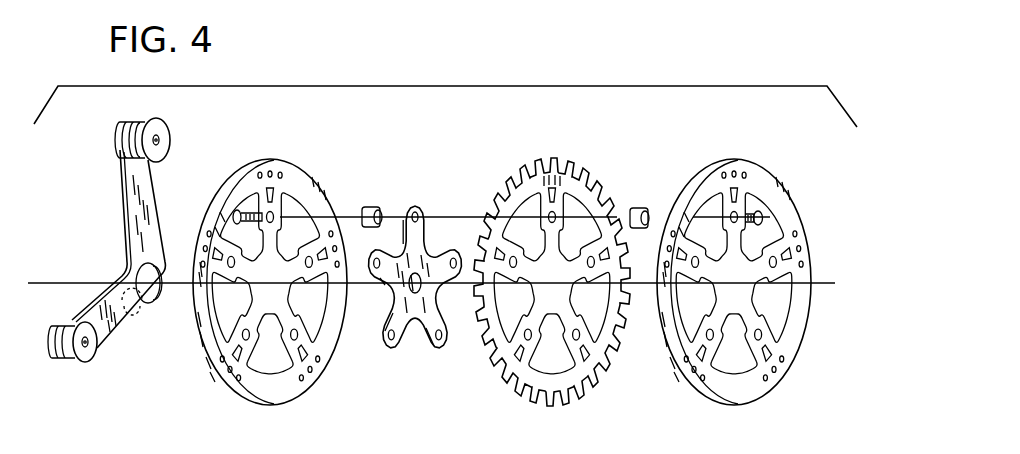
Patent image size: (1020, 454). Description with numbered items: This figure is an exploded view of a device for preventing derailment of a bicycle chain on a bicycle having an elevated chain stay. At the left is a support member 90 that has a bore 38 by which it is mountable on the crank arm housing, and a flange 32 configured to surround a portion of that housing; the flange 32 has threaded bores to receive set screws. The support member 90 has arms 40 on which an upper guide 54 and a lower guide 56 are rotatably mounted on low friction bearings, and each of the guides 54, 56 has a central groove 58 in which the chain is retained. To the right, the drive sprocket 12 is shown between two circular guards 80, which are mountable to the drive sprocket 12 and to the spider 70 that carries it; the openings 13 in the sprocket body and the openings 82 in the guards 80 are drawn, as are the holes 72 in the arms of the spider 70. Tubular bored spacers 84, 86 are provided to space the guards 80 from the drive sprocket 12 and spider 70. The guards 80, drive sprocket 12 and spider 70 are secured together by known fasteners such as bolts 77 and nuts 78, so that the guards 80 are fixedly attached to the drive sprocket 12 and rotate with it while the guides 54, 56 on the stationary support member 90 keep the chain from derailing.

The drive sprocket 12 is at (578, 180).
The sprocket body openings 13 is at (590, 264).
The flange 32 is at (150, 318).
The bore 38 is at (156, 275).
The arms 40 is at (142, 176).
The upper guide 54 is at (171, 140).
The lower guide 56 is at (88, 364).
The central groove 58 is at (131, 120).
The spider 70 is at (405, 325).
The spider arm hole 72 is at (440, 340).
The bolts 77 is at (245, 232).
The nuts 78 is at (765, 215).
The circular guards 80 is at (310, 188).
The disk opening 82 is at (502, 281).
The tubular bored spacer 84 is at (641, 206).
The tubular bored spacer 86 is at (373, 206).
The support member 90 is at (124, 207).